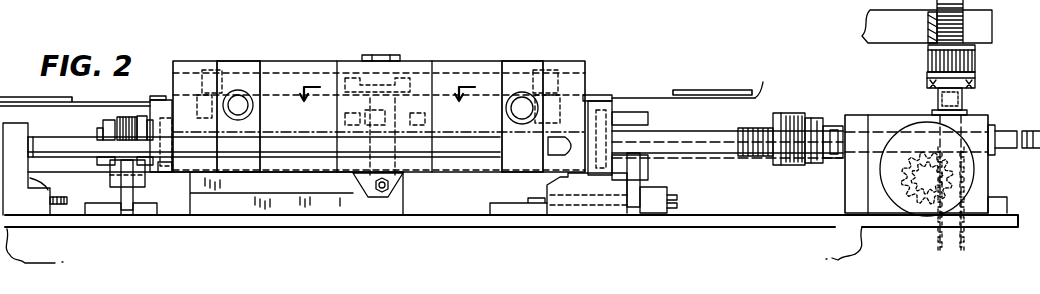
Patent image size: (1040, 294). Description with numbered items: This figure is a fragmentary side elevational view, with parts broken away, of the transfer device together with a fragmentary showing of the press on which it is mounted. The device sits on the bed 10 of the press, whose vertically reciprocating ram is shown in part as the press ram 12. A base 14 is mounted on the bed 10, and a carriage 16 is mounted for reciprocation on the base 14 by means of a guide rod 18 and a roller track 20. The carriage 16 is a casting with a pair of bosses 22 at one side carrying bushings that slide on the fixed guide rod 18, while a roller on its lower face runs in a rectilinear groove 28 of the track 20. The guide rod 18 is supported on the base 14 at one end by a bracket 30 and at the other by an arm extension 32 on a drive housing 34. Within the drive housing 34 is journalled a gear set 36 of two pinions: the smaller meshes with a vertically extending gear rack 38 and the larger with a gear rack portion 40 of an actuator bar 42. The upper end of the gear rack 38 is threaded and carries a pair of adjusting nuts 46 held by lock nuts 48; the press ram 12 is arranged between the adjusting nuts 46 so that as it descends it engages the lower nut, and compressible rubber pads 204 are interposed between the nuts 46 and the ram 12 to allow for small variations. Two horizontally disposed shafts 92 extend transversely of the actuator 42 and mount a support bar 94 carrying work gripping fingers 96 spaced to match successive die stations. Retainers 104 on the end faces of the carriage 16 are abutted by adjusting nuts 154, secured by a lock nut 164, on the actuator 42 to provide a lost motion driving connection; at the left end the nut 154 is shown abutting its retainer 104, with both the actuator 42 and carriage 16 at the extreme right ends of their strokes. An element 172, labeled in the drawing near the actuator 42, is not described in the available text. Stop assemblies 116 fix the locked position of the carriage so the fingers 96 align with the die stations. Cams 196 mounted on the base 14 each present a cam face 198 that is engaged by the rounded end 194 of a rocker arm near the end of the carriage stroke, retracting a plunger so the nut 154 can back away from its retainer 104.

The bed 10 is at (398, 256).
The press ram 12 is at (992, 26).
The base 14 is at (718, 218).
The carriage 16 is at (534, 59).
The guide rod 18 is at (478, 142).
The roller track 20 is at (280, 208).
The bosses 22 is at (256, 128).
The rectilinear groove 28 is at (227, 186).
The bracket 30 is at (33, 208).
The arm extension 32 is at (848, 190).
The drive housing 34 is at (882, 119).
The gear set 36 is at (916, 188).
The vertical gear rack 38 is at (962, 238).
The gear rack portion 40 is at (999, 136).
The actuator bar 42 is at (680, 132).
The adjusting nuts 46 is at (975, 58).
The lock nuts 48 is at (975, 81).
The shaft 92 is at (238, 110).
The support bar 94 is at (743, 89).
The work gripping fingers 96 is at (38, 97).
The retainers 104 is at (164, 100).
The stop assemblies 116 is at (96, 186).
The adjusting nuts 154 is at (800, 114).
The lock nut 164 is at (820, 119).
The bearing block 172 is at (636, 110).
The rounded end 194 is at (129, 212).
The cams 196 is at (153, 210).
The cam face 198 is at (95, 207).
The compressible rubber pads 204 is at (929, 45).